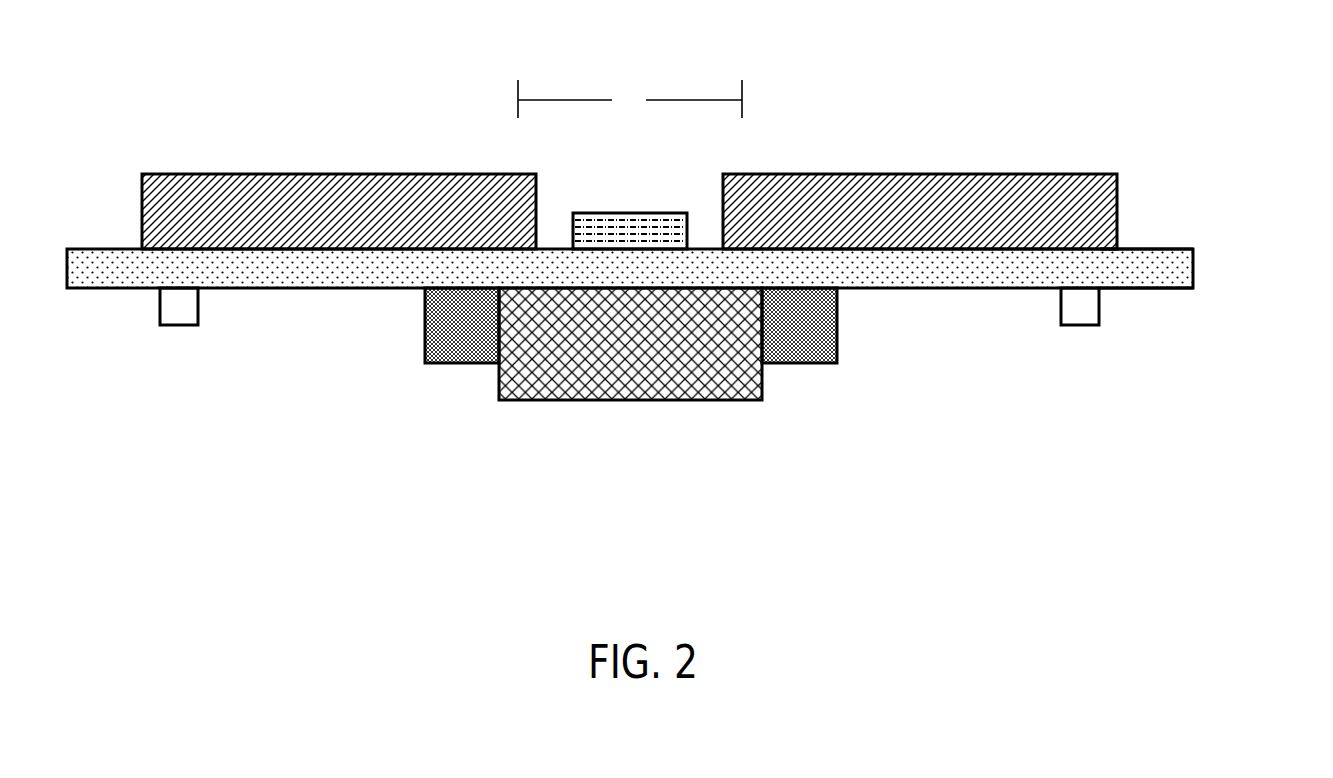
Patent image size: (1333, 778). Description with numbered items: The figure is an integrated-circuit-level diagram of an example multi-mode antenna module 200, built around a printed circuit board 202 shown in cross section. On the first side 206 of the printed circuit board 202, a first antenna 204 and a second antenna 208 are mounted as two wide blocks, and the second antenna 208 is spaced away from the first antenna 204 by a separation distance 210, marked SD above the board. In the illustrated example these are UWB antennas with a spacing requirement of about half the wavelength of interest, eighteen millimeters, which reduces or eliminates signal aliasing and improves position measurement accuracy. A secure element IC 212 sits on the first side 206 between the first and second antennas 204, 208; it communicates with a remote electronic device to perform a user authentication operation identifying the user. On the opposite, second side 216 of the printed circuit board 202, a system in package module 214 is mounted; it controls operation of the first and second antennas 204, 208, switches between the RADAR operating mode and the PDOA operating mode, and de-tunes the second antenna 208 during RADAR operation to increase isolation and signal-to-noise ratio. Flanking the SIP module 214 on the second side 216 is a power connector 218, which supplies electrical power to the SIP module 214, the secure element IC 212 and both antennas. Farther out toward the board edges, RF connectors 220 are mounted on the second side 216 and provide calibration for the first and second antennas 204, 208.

The multi-mode antenna module 200 is at (1198, 54).
The printed circuit board 202 is at (1193, 267).
The first antenna 204 is at (330, 174).
The first side 206 is at (1158, 242).
The second antenna 208 is at (907, 174).
The separation distance 210 is at (590, 100).
The secure element IC 212 is at (613, 213).
The system in package module 214 is at (610, 401).
The second side 216 is at (1158, 296).
The power connector 218 is at (462, 364).
The RF connectors 220 is at (178, 326).